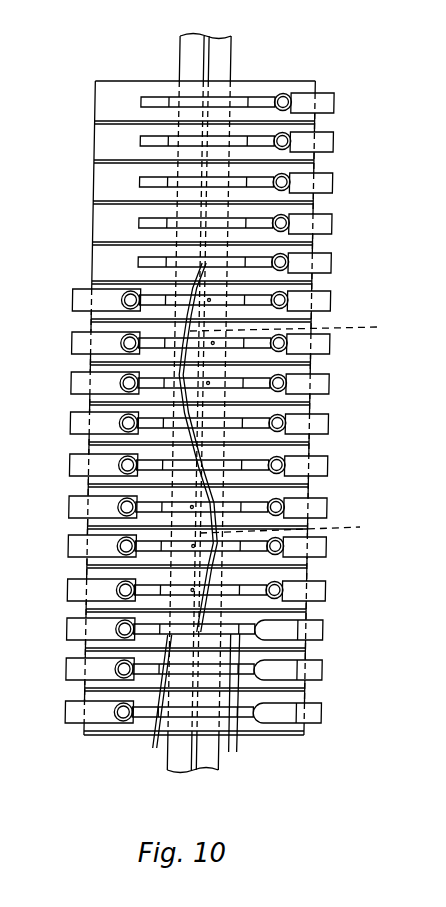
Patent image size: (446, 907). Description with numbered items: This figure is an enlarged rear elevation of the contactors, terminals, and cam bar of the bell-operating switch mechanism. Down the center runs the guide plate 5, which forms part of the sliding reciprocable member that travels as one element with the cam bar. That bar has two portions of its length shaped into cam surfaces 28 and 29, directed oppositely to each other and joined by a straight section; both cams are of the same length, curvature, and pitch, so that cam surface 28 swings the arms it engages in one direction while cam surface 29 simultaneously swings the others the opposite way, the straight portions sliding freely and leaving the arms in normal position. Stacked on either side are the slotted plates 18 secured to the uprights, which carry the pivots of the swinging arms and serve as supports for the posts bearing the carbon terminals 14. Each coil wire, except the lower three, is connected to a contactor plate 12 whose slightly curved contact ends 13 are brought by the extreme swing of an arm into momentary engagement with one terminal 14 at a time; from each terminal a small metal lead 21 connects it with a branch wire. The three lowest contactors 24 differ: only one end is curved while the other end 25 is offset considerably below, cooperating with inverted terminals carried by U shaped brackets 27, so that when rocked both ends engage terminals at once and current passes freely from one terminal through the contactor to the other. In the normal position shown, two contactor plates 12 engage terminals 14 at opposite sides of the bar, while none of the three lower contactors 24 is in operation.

The guide plate 5 is at (233, 49).
The contactor plate 12 is at (242, 96).
The contact end 13 is at (276, 223).
The carbon terminal 14 is at (294, 99).
The slotted plate 18 is at (318, 205).
The metal lead 21 is at (335, 100).
The contactor 24 is at (148, 722).
The offset end 25 is at (239, 703).
The U shaped bracket 27 is at (324, 628).
The cam surface 28 is at (291, 527).
The cam surface 29 is at (296, 323).